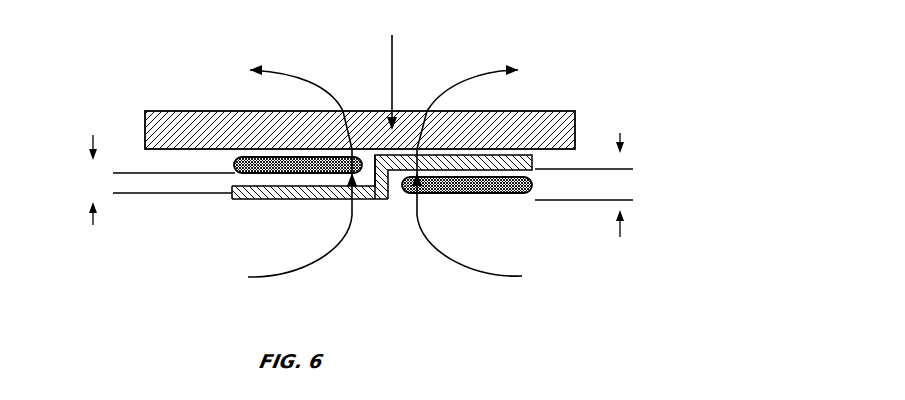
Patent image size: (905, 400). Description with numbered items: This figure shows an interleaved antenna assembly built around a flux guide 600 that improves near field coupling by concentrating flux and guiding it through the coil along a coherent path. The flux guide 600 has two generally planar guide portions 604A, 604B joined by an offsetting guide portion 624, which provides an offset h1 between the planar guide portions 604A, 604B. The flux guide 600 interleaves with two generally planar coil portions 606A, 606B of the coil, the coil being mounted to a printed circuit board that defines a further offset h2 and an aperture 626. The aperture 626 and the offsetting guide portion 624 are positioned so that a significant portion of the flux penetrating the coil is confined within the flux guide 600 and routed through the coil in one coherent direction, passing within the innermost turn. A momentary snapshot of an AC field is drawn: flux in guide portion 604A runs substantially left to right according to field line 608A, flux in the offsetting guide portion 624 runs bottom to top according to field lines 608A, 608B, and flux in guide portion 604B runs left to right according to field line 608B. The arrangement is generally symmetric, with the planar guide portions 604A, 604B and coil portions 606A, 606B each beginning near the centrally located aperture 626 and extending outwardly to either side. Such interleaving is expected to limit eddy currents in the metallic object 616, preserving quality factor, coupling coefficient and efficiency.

The flux guide 600 is at (302, 210).
The planar guide portion 604A is at (260, 200).
The planar guide portion 604B is at (532, 160).
The planar coil portion 606A is at (237, 158).
The planar coil portion 606B is at (500, 193).
The field line 608A is at (298, 72).
The field line 608B is at (485, 70).
The metallic object 616 is at (247, 111).
The offsetting guide portion 624 is at (380, 200).
The aperture 626 is at (392, 35).
The offset h1 is at (586, 185).
The offset h2 is at (161, 180).